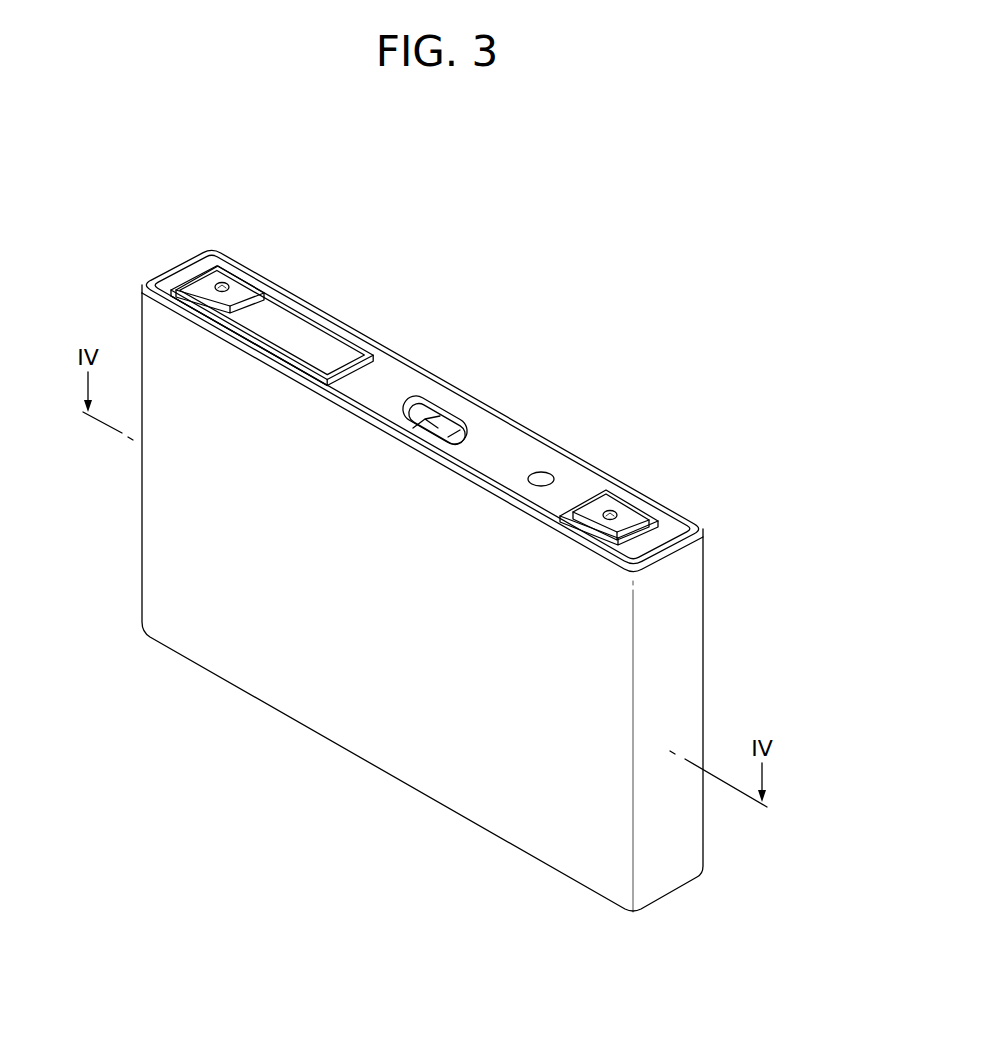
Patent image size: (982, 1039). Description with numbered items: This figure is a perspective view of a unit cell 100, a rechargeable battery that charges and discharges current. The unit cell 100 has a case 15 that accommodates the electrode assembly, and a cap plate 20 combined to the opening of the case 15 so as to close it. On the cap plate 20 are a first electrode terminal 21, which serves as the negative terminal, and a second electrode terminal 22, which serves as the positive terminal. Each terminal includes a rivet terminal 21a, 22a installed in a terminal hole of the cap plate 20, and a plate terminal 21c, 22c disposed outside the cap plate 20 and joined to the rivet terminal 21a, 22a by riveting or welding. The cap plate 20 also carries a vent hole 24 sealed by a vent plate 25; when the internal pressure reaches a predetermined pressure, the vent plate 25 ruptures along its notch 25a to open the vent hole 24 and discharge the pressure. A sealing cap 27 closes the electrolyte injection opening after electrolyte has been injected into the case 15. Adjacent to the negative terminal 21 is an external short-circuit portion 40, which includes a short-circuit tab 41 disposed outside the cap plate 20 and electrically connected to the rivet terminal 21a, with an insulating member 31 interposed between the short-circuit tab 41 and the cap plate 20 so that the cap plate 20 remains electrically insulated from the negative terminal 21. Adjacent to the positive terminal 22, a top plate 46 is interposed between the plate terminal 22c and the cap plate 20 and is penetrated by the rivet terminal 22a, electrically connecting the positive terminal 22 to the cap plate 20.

The unit cell 100 is at (457, 555).
The case 15 is at (340, 722).
The cap plate 20 is at (395, 382).
The first electrode terminal 21 is at (224, 256).
The rivet terminal 21a is at (217, 284).
The plate terminal 21c is at (246, 287).
The second electrode terminal 22 is at (666, 530).
The rivet terminal 22a is at (618, 512).
The plate terminal 22c is at (626, 524).
The vent hole 24 is at (482, 367).
The vent plate 25 is at (443, 420).
The notch 25a is at (447, 433).
The sealing cap 27 is at (543, 473).
The insulating member 31 is at (290, 305).
The external short-circuit portion 40 is at (291, 312).
The short-circuit tab 41 is at (342, 355).
The top plate 46 is at (633, 542).